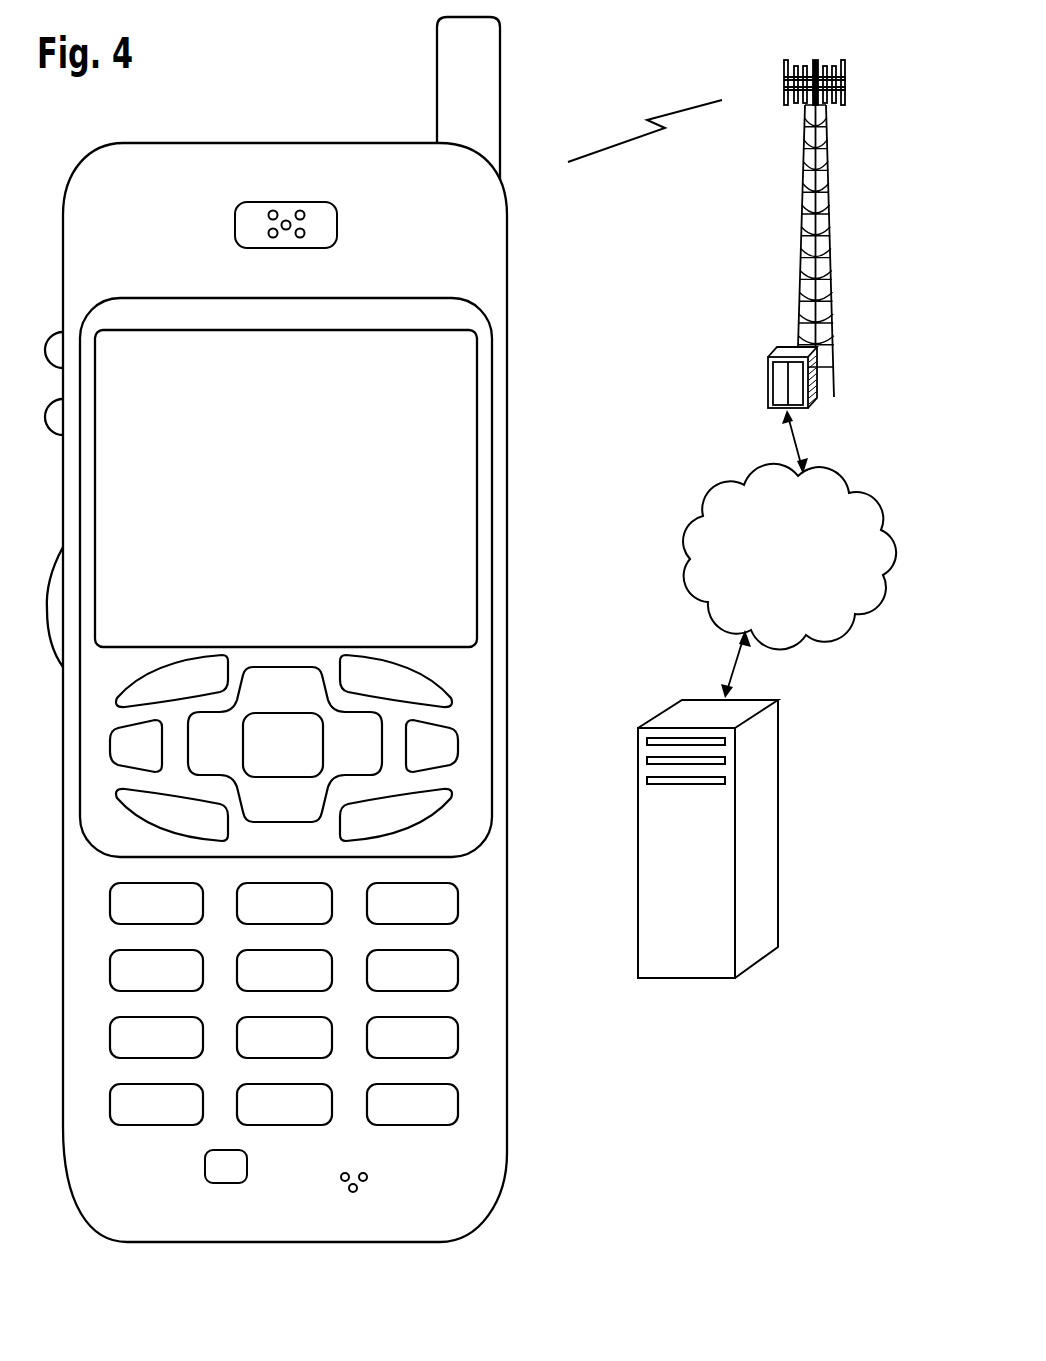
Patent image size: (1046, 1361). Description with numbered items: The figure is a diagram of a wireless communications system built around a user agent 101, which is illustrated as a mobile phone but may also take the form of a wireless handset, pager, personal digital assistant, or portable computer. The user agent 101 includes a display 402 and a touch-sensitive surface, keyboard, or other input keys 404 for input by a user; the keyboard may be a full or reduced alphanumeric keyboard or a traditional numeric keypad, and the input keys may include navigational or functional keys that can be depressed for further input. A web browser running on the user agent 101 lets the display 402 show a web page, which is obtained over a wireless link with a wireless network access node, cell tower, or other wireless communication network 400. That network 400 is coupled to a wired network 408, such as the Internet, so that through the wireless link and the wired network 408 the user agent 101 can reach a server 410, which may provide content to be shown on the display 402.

The user agent 101 is at (315, 639).
The wireless communication network or system 400 is at (800, 248).
The display 402 is at (480, 342).
The input keys 404 is at (519, 653).
The wired network 408 is at (710, 610).
The server 410 is at (683, 982).